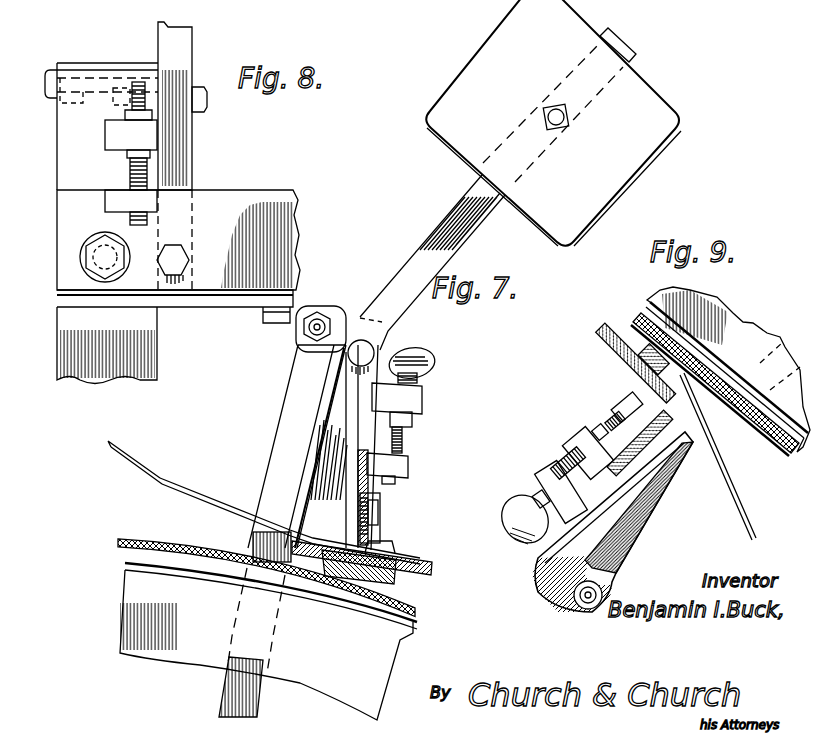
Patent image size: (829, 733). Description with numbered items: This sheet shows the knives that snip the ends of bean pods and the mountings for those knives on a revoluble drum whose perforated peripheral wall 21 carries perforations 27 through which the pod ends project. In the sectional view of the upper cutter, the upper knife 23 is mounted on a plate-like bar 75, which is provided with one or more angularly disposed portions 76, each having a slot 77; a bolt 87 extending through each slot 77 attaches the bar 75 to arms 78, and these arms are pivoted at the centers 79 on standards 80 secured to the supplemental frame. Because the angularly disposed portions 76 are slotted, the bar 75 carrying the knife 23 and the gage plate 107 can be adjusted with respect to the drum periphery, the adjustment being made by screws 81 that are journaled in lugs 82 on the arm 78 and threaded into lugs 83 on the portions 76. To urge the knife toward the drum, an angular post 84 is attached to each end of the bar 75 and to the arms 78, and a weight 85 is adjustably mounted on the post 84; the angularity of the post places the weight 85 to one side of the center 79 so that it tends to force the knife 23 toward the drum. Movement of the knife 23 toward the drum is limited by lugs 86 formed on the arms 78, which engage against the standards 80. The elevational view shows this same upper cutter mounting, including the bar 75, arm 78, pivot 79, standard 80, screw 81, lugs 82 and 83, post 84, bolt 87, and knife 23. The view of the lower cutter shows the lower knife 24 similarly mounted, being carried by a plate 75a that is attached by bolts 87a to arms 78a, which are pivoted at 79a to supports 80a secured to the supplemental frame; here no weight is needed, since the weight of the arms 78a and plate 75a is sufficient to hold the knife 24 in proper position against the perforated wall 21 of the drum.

In FIG. 8, the pivot center 79 is at (44, 82).
In FIG. 7, the pivot center 79 is at (321, 326).
In FIG. 8, the angular post 84 is at (189, 59).
In FIG. 7, the angular post 84 is at (465, 245).
In FIG. 7, the weight 85 is at (645, 150).
In FIG. 8, the lugs 82 is at (148, 138).
In FIG. 7, the lugs 82 is at (418, 407).
In FIG. 8, the screws 81 is at (147, 172).
In FIG. 7, the screws 81 is at (403, 447).
In FIG. 8, the arms 78 is at (107, 126).
In FIG. 8, the slot 77 is at (110, 231).
In FIG. 8, the angularly disposed portions 76 is at (291, 237).
In FIG. 7, the angularly disposed portions 76 is at (368, 487).
In FIG. 8, the clamp bolt 87 is at (88, 259).
In FIG. 7, the clamp bolt 87 is at (385, 520).
In FIG. 8, the standards 80 is at (150, 337).
In FIG. 7, the standards 80 is at (283, 418).
In FIG. 8, the bar 75 is at (294, 301).
In FIG. 7, the bar 75 is at (436, 576).
In FIG. 7, the lugs 83 is at (409, 470).
In FIG. 8, the upper knife 23 is at (276, 323).
In FIG. 7, the upper knife 23 is at (328, 570).
In FIG. 7, the lugs 86 is at (297, 520).
In FIG. 7, the gage plate 107 is at (133, 463).
In FIG. 7, the perforations 27 is at (183, 551).
In FIG. 9, the perforations 27 is at (760, 440).
In FIG. 7, the perforated peripheral wall 21 is at (201, 556).
In FIG. 9, the perforated peripheral wall 21 is at (777, 453).
In FIG. 9, the lower knife 24 is at (703, 380).
In FIG. 9, the plate 75a is at (607, 332).
In FIG. 9, the bolts 87a is at (634, 404).
In FIG. 9, the arms 78a is at (647, 417).
In FIG. 9, the supports 80a is at (700, 485).
In FIG. 9, the pivot 79a is at (580, 605).